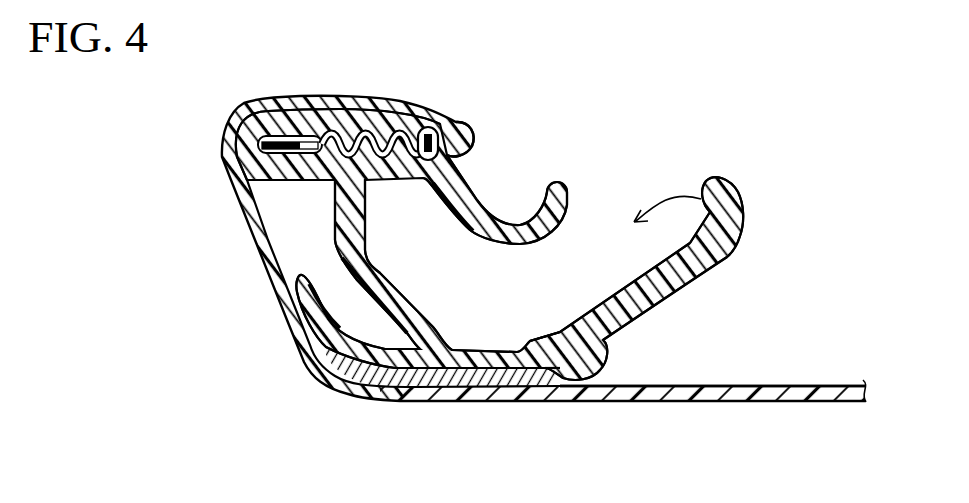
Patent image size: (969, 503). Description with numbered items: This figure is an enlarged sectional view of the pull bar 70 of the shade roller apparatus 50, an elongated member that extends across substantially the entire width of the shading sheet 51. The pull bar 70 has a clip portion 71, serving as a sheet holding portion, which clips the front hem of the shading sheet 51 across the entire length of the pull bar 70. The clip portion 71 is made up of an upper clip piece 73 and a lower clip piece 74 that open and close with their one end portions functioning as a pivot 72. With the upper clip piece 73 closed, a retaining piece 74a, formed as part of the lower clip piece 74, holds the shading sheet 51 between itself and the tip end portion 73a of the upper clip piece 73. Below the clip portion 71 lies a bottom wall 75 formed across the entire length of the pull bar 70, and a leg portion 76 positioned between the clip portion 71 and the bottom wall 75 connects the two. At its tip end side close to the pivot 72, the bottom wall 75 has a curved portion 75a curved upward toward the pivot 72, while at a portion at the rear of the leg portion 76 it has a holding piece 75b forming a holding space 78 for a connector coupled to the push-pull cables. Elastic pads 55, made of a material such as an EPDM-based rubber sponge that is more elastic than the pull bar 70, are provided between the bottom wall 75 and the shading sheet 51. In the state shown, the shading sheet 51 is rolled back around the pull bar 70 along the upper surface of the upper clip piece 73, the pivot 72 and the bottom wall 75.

The shade roller apparatus 50 is at (764, 307).
The shading sheet 51 is at (762, 402).
The elastic pads 55 is at (413, 388).
The pull bar 70 is at (565, 173).
The clip portion 71 is at (267, 183).
The pivot 72 is at (252, 150).
The upper clip piece 73 is at (352, 125).
The tip end portion 73a is at (432, 127).
The lower clip piece 74 is at (397, 170).
The retaining piece 74a is at (463, 133).
The bottom wall 75 is at (486, 350).
The curved portion 75a is at (320, 322).
The holding piece 75b is at (687, 272).
The leg portion 76 is at (367, 254).
The holding space 78 is at (727, 207).